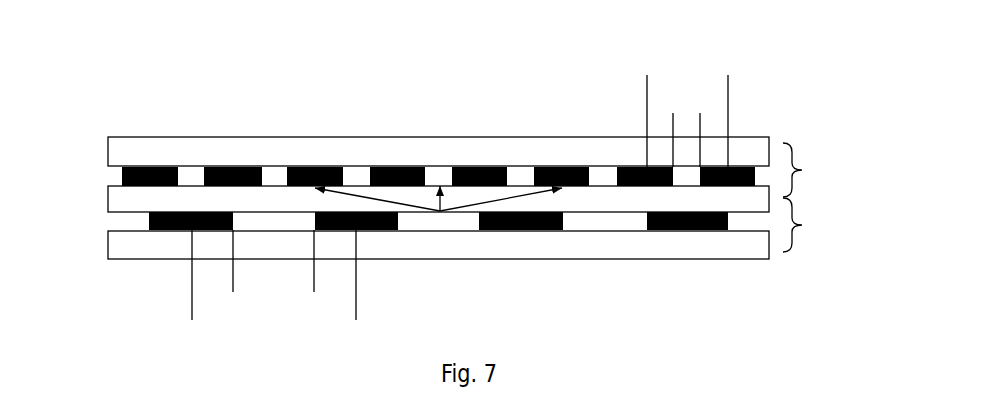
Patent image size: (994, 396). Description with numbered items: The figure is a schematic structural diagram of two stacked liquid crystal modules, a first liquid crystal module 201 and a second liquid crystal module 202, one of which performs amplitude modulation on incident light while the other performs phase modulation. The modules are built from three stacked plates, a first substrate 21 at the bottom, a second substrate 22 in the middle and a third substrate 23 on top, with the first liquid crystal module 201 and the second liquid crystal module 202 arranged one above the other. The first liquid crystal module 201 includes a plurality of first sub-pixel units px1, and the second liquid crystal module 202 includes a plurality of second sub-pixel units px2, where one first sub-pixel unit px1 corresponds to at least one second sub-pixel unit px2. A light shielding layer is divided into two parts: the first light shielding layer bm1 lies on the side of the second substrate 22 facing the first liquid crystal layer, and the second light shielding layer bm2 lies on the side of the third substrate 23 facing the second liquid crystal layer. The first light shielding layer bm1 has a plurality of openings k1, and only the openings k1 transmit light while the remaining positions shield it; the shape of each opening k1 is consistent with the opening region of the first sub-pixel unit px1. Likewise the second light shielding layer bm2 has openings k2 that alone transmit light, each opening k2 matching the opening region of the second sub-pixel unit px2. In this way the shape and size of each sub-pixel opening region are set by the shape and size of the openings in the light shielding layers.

The first substrate 21 is at (108, 243).
The second substrate 22 is at (108, 197).
The third substrate 23 is at (108, 151).
The first liquid crystal module 201 is at (817, 225).
The second liquid crystal module 202 is at (818, 170).
The first light shielding layer bm1 is at (523, 230).
The second light shielding layer bm2 is at (314, 167).
The first sub-pixel unit px1 is at (356, 304).
The second sub-pixel unit px2 is at (728, 93).
The opening k1 is at (314, 277).
The opening k2 is at (783, 124).